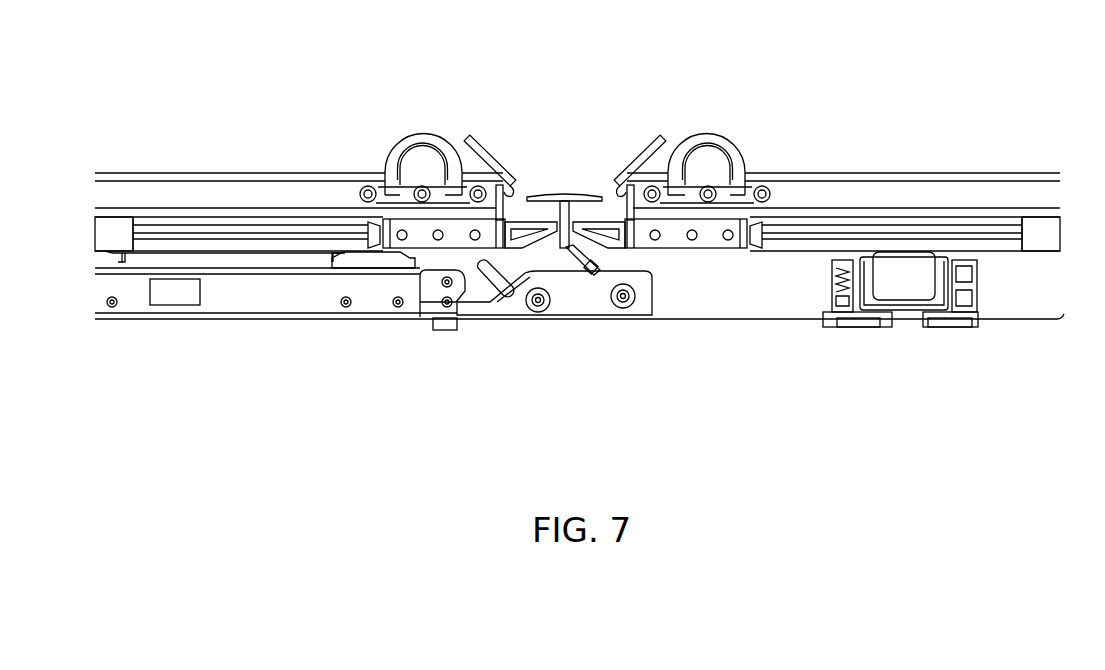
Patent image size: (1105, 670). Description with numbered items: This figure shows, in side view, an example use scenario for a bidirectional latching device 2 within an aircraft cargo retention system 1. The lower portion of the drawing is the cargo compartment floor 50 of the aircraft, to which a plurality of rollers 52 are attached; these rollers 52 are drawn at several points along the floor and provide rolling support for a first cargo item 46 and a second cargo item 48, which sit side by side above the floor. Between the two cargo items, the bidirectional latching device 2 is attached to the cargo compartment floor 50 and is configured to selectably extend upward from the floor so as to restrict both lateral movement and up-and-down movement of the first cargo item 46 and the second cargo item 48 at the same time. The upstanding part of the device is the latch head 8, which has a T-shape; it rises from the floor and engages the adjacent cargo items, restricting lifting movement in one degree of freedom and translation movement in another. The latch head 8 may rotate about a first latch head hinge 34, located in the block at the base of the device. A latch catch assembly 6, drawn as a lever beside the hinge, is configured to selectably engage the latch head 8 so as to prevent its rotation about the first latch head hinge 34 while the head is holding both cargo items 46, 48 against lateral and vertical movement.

The aircraft cargo retention system 1 is at (640, 78).
The bidirectional latching device 2 is at (630, 436).
The latch catch assembly 6 is at (495, 283).
The latch head 8 is at (567, 196).
The first latch head hinge 34 is at (627, 300).
The first cargo item 46 is at (803, 128).
The second cargo item 48 is at (378, 128).
The cargo compartment floor 50 is at (725, 337).
The rollers 52 is at (120, 258).